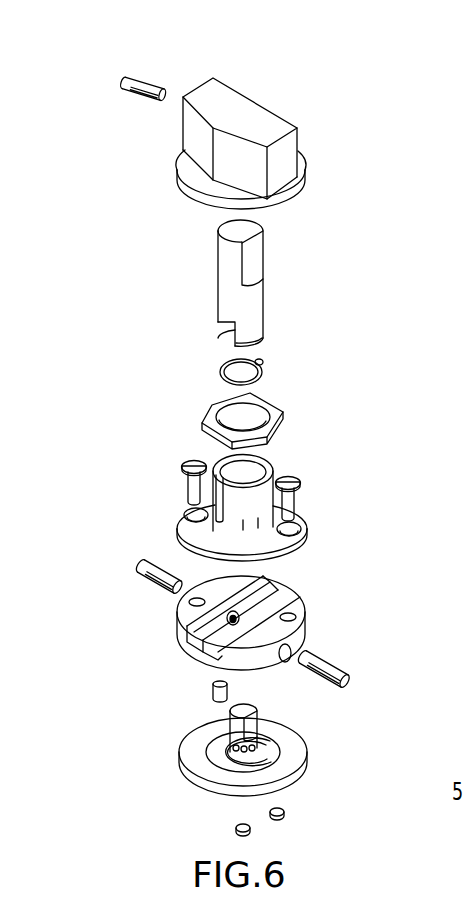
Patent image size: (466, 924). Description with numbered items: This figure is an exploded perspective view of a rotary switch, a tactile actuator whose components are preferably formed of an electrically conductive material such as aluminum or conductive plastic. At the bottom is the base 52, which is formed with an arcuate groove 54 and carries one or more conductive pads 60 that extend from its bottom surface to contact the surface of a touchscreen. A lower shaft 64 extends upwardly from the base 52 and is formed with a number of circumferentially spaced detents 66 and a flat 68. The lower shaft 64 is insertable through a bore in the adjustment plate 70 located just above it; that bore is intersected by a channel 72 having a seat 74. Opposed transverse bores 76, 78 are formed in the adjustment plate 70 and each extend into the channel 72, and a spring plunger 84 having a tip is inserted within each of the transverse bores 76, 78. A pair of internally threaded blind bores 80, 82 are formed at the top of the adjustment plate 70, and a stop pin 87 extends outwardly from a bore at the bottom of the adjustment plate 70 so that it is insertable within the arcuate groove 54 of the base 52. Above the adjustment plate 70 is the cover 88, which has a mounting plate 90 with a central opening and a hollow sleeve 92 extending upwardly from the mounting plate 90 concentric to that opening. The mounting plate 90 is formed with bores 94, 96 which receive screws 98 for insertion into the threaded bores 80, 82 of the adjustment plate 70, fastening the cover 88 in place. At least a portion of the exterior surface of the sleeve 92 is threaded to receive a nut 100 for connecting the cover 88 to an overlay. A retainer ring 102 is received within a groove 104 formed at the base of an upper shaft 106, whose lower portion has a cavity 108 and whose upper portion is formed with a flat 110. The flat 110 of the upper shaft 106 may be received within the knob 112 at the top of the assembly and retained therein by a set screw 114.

The base 52 is at (196, 773).
The arcuate groove 54 is at (210, 760).
The conductive pads 60 is at (251, 829).
The lower shaft 64 is at (228, 726).
The detents 66 is at (272, 746).
The flat 68 is at (251, 726).
The adjustment plate 70 is at (263, 593).
The channel 72 is at (280, 589).
The seat 74 is at (190, 639).
The transverse bore 76 is at (231, 612).
The transverse bore 78 is at (288, 651).
The threaded blind bore 80 is at (192, 603).
The threaded blind bore 82 is at (293, 618).
The spring plunger 84 is at (143, 571).
The stop pin 87 is at (212, 693).
The cover 88 is at (269, 484).
The mounting plate 90 is at (308, 536).
The hollow sleeve 92 is at (266, 469).
The bore 94 is at (186, 510).
The bore 96 is at (298, 525).
The screws 98 is at (193, 460).
The nut 100 is at (276, 408).
The retainer ring 102 is at (222, 377).
The groove 104 is at (262, 336).
The upper shaft 106 is at (239, 279).
The cavity 108 is at (229, 343).
The flat 110 is at (253, 255).
The knob 112 is at (266, 106).
The set screw 114 is at (134, 87).